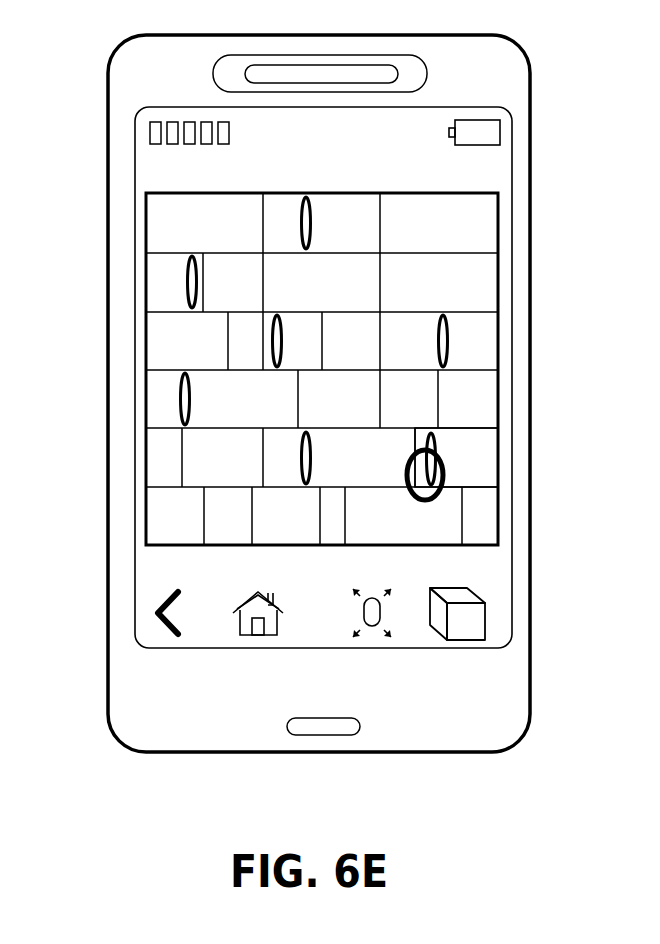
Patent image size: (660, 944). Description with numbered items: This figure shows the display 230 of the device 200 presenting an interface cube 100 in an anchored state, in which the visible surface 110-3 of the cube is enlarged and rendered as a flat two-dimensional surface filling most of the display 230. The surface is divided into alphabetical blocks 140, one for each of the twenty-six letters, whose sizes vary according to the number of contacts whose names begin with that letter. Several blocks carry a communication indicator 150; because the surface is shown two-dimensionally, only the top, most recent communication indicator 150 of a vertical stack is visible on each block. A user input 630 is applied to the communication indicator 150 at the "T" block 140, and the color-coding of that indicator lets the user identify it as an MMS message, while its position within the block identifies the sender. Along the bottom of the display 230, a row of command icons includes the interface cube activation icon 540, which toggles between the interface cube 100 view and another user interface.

The device 200 is at (162, 29).
The display 230 is at (205, 106).
The interface cube 100 is at (168, 176).
The surface 110-3 is at (445, 191).
The communication indicator 150 is at (433, 434).
The alphabetical block 140 is at (478, 458).
The user input 630 is at (447, 485).
The interface cube activation icon 540 is at (441, 638).